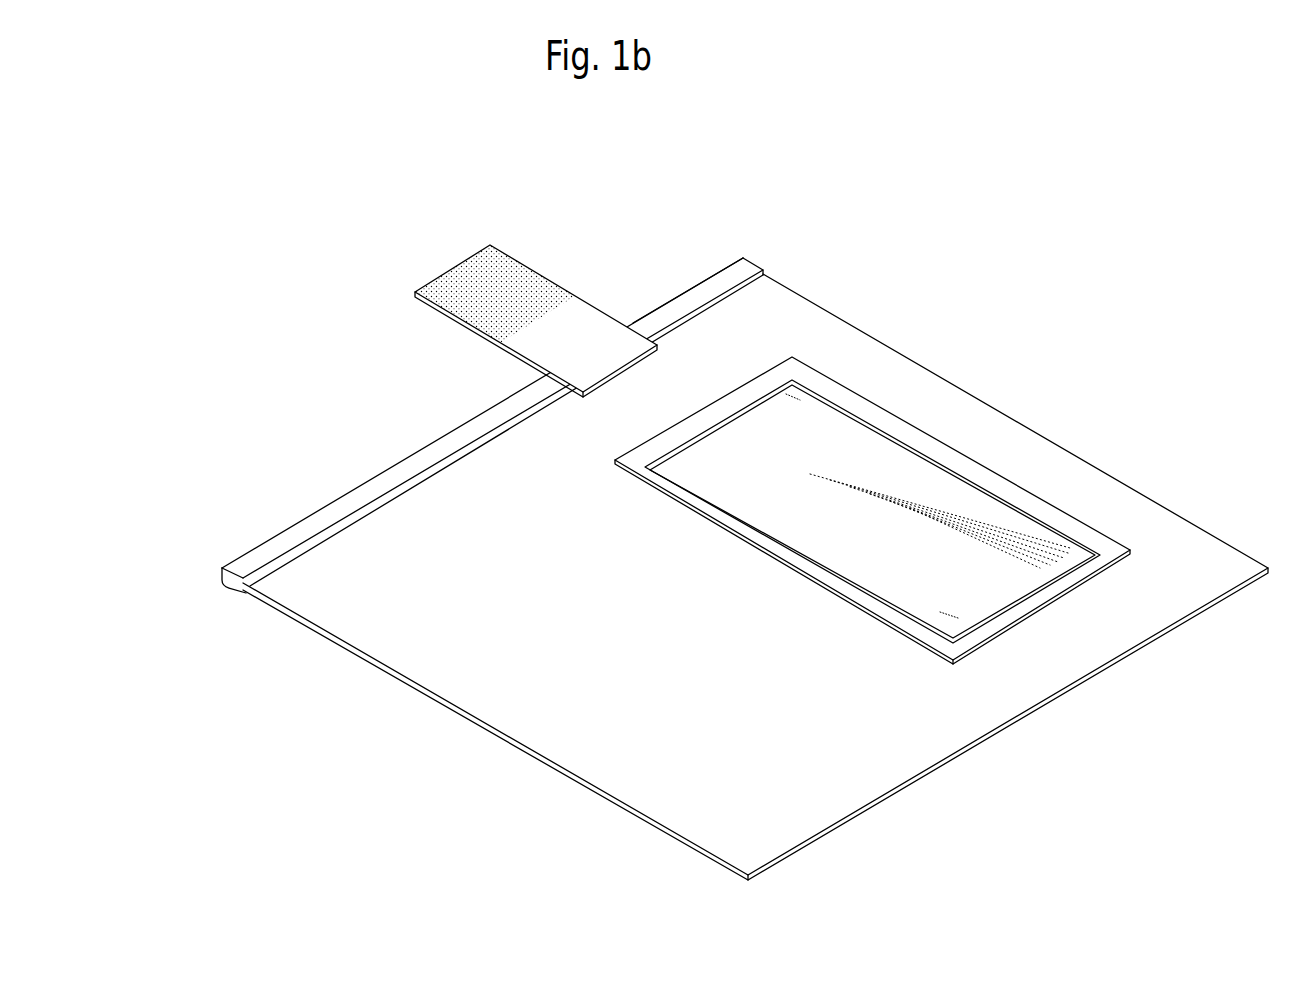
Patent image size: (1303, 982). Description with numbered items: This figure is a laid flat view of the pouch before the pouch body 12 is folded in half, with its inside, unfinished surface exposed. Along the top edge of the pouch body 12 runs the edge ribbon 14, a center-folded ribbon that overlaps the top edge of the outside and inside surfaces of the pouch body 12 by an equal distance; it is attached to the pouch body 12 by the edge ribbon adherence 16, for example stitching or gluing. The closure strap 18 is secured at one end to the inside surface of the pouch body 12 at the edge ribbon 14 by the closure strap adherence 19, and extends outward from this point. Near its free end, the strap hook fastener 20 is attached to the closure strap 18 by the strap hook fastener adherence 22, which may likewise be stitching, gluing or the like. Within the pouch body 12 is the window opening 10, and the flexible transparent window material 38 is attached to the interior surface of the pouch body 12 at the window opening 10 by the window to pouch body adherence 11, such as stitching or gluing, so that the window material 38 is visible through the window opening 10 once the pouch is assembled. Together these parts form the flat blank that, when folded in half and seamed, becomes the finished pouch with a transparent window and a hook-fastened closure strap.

The window opening 10 is at (950, 472).
The window to pouch body adherence 11 is at (978, 648).
The pouch body 12 is at (517, 630).
The edge ribbon 14 is at (370, 490).
The edge ribbon adherence 16 is at (297, 553).
The closure strap 18 is at (553, 339).
The closure strap adherence 19 is at (553, 380).
The strap hook fastener 20 is at (507, 299).
The strap hook fastener adherence 22 is at (545, 312).
The flexible transparent window material 38 is at (948, 565).